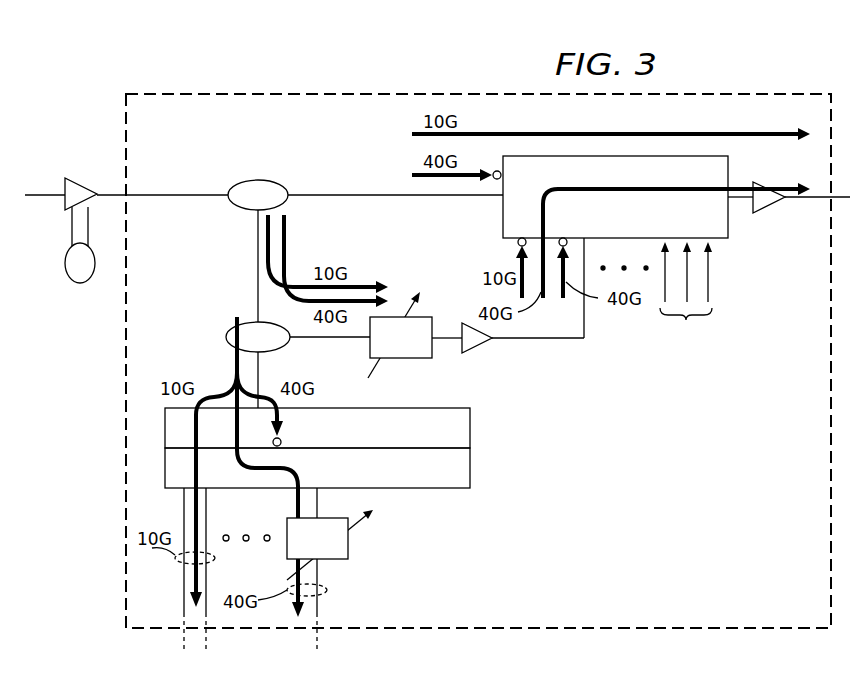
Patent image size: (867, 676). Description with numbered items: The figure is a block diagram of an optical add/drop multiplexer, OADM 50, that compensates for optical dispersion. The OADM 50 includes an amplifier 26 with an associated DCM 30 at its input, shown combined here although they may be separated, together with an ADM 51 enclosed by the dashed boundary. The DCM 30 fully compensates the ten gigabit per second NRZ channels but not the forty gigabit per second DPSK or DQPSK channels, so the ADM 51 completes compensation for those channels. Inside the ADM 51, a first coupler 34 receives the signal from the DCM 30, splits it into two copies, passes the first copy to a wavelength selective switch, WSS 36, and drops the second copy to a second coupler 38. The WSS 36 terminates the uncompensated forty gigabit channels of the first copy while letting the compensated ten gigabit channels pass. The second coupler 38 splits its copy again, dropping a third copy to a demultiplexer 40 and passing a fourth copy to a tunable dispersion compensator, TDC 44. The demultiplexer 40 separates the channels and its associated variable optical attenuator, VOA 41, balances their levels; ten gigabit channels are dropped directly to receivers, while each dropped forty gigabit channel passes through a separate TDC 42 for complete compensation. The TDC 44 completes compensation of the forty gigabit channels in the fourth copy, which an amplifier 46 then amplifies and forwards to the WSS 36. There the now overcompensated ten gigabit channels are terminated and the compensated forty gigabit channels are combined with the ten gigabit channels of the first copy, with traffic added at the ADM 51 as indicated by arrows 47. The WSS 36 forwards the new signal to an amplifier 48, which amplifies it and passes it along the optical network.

The amplifier 26 is at (88, 180).
The DCM 30 is at (63, 266).
The first coupler 34 is at (250, 180).
The wavelength selective switch 36 is at (503, 218).
The second coupler 38 is at (228, 335).
The demultiplexer 40 is at (471, 428).
The variable optical attenuator 41 is at (471, 470).
The tunable dispersion compensator 42 is at (333, 561).
The tunable dispersion compensator 44 is at (368, 350).
The amplifier 46 is at (480, 347).
The arrows 47 is at (686, 294).
The amplifier 48 is at (780, 200).
The OADM 50 is at (281, 74).
The ADM 51 is at (667, 478).